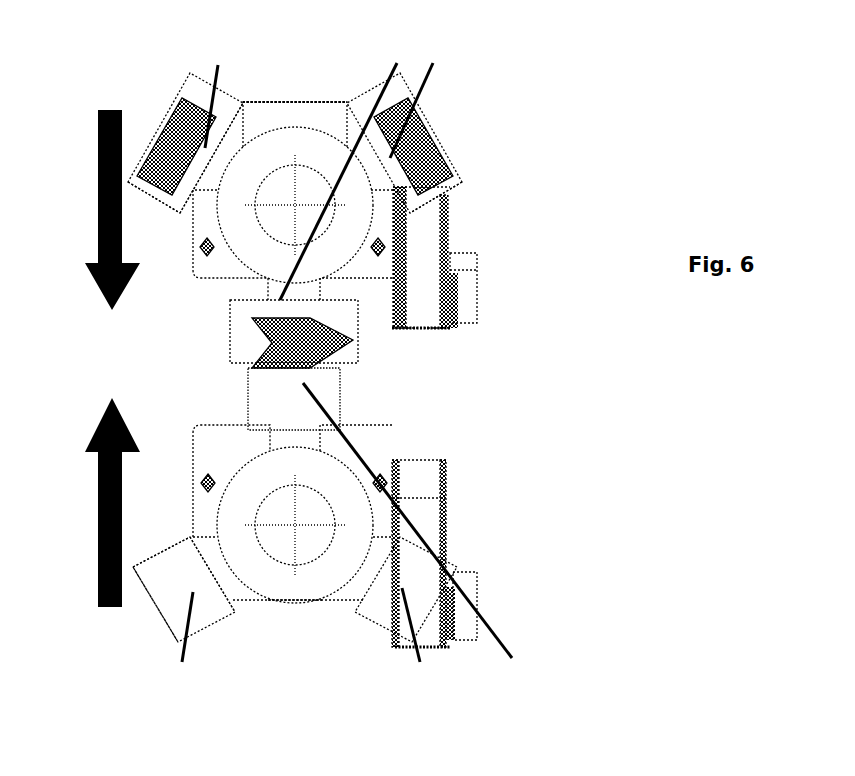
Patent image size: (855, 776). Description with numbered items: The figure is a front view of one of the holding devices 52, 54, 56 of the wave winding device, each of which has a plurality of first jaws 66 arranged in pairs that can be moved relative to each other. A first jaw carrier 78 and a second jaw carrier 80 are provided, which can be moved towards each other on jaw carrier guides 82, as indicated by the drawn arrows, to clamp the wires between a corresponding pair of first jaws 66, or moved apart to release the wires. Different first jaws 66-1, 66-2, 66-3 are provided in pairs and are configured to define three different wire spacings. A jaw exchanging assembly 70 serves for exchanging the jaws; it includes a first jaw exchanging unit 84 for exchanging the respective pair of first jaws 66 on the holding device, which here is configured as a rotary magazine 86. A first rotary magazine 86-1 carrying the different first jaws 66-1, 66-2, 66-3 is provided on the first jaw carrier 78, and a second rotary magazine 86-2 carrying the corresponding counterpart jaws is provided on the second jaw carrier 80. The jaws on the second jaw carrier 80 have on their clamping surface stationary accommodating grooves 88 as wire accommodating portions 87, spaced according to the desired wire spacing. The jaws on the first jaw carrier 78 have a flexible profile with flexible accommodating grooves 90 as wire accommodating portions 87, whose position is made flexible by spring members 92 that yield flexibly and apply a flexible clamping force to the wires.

The holding device 52 is at (565, 105).
The holding device 54 is at (560, 113).
The holding device 56 is at (560, 113).
The first jaw 66 is at (226, 92).
The first jaw for the first wire spacing 66-1 is at (422, 355).
The first jaw for the second wire spacing 66-2 is at (435, 372).
The first jaw for the third wire spacing 66-3 is at (199, 370).
The jaw exchanging assembly 70 is at (598, 230).
The first jaw carrier 78 is at (307, 108).
The second jaw carrier 80 is at (207, 453).
The jaw carrier guide 82 is at (425, 320).
The first jaw exchanging unit 84 is at (395, 218).
The rotary magazine 86 is at (170, 236).
The first rotary magazine 86-1 is at (464, 150).
The second rotary magazine 86-2 is at (302, 593).
The wire accommodating portion 87 is at (442, 113).
The stationary accommodating groove 88 is at (134, 598).
The flexible accommodating groove 90 is at (450, 137).
The spring member 92 is at (165, 118).